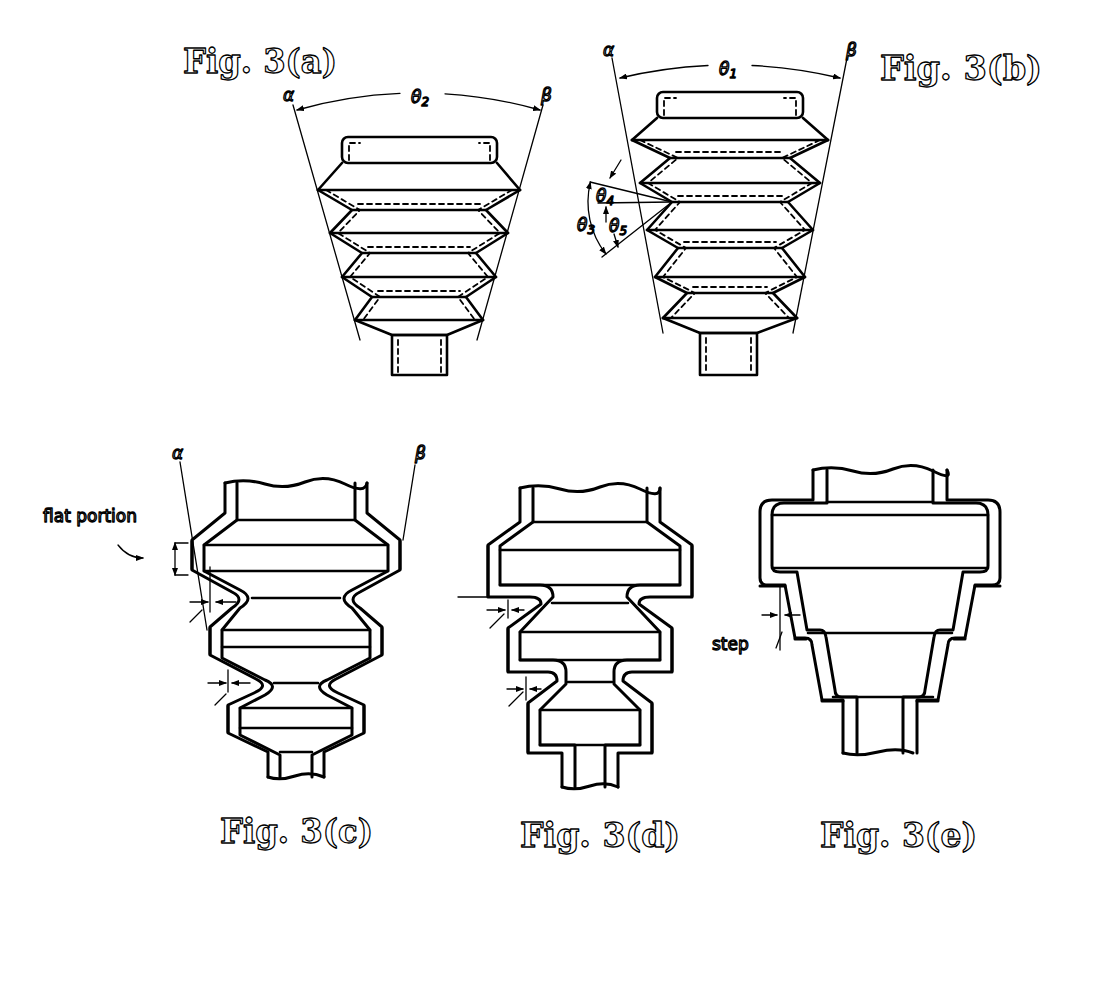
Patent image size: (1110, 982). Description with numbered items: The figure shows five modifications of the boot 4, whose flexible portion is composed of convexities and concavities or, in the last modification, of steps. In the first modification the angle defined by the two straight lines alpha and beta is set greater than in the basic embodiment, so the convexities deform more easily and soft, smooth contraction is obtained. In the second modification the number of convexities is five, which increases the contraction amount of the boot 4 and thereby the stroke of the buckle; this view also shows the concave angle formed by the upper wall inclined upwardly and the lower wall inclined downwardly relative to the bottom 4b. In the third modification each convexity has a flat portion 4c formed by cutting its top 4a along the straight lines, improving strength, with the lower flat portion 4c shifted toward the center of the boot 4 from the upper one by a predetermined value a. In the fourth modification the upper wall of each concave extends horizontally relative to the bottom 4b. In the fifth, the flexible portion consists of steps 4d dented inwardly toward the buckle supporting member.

In FIG. 3A, the boot 4 is at (391, 256).
In FIG. 3B, the boot 4 is at (727, 233).
In FIG. 3C, the boot 4 is at (273, 628).
In FIG. 3D, the boot 4 is at (587, 635).
In FIG. 3E, the boot 4 is at (863, 609).
In FIG. 3A, the top of the convexity 4a is at (318, 190).
In FIG. 3B, the top of the convexity 4a is at (805, 277).
In FIG. 3A, the bottom of the concave 4b is at (352, 210).
In FIG. 3B, the bottom of the concave 4b is at (773, 293).
In FIG. 3C, the bottom of the concave 4b is at (320, 679).
In FIG. 3D, the bottom of the concave 4b is at (614, 679).
In FIG. 3C, the flat portion 4c is at (215, 742).
In FIG. 3D, the flat portion 4c is at (488, 572).
In FIG. 3E, the step 4d is at (772, 590).